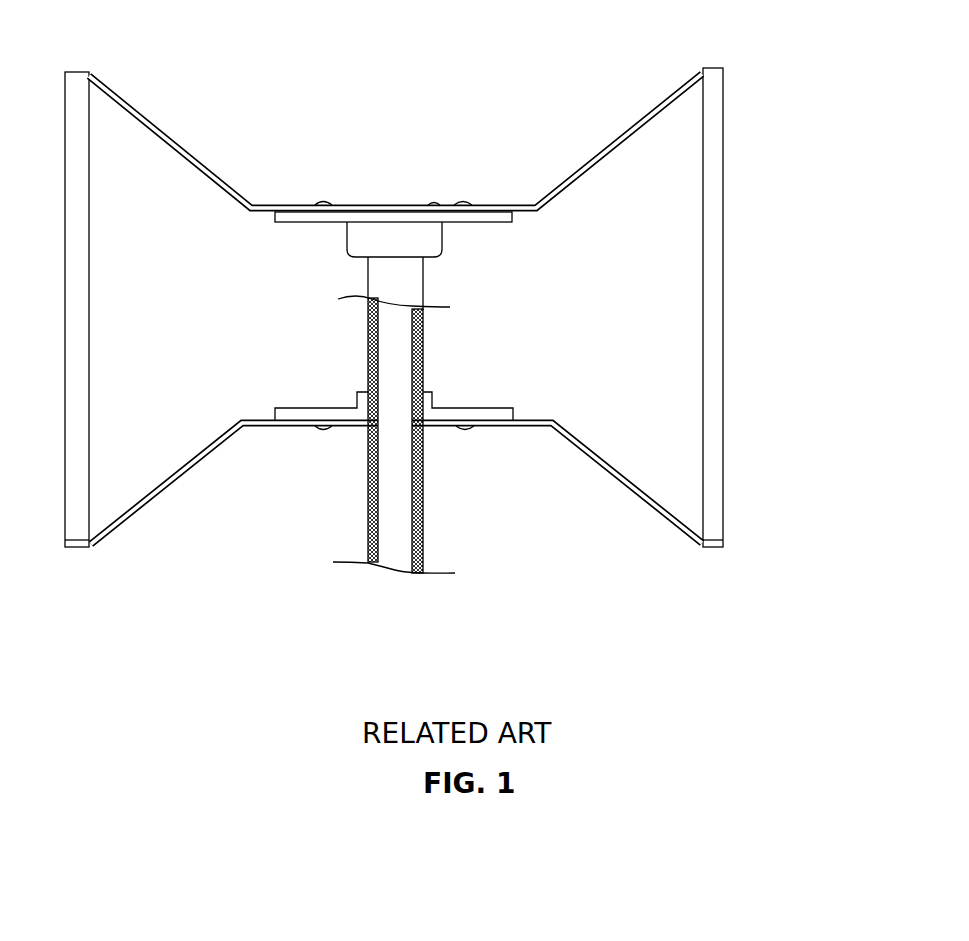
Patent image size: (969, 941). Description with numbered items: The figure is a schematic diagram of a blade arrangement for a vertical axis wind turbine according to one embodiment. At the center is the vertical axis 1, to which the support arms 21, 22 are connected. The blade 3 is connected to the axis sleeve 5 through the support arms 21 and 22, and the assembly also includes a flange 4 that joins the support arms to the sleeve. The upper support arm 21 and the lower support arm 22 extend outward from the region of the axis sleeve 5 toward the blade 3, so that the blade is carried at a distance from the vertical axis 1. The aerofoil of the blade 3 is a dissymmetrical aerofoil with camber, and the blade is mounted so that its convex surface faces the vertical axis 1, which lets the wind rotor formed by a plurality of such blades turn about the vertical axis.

The vertical axis 1 is at (482, 443).
The blade 3 is at (783, 312).
The flange 4 is at (450, 316).
The axis sleeve 5 is at (500, 435).
The support arm 21 is at (395, 126).
The support arm 22 is at (396, 510).